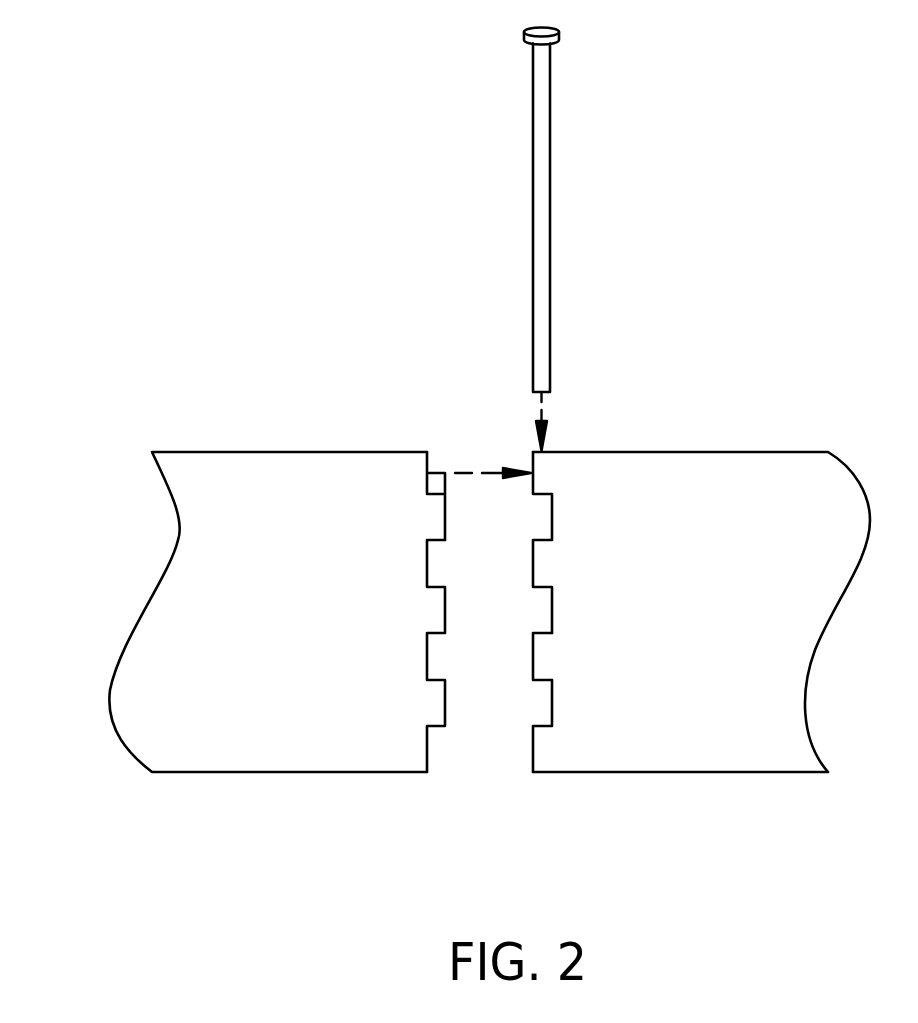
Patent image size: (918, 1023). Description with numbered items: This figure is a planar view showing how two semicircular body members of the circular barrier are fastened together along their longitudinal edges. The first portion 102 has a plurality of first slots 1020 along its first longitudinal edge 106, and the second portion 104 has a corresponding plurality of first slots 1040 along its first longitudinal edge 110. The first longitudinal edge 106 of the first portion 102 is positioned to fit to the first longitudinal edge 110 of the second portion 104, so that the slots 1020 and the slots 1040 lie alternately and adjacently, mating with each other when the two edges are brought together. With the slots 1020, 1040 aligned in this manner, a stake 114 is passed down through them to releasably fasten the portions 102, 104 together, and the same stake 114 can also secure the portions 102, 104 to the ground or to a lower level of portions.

The first portion 102 is at (697, 602).
The second portion 104 is at (233, 602).
The first longitudinal edge 106 is at (533, 752).
The first longitudinal edge 110 is at (426, 753).
The stake 114 is at (550, 223).
The first slots 1020 is at (540, 662).
The first slots 1040 is at (443, 497).